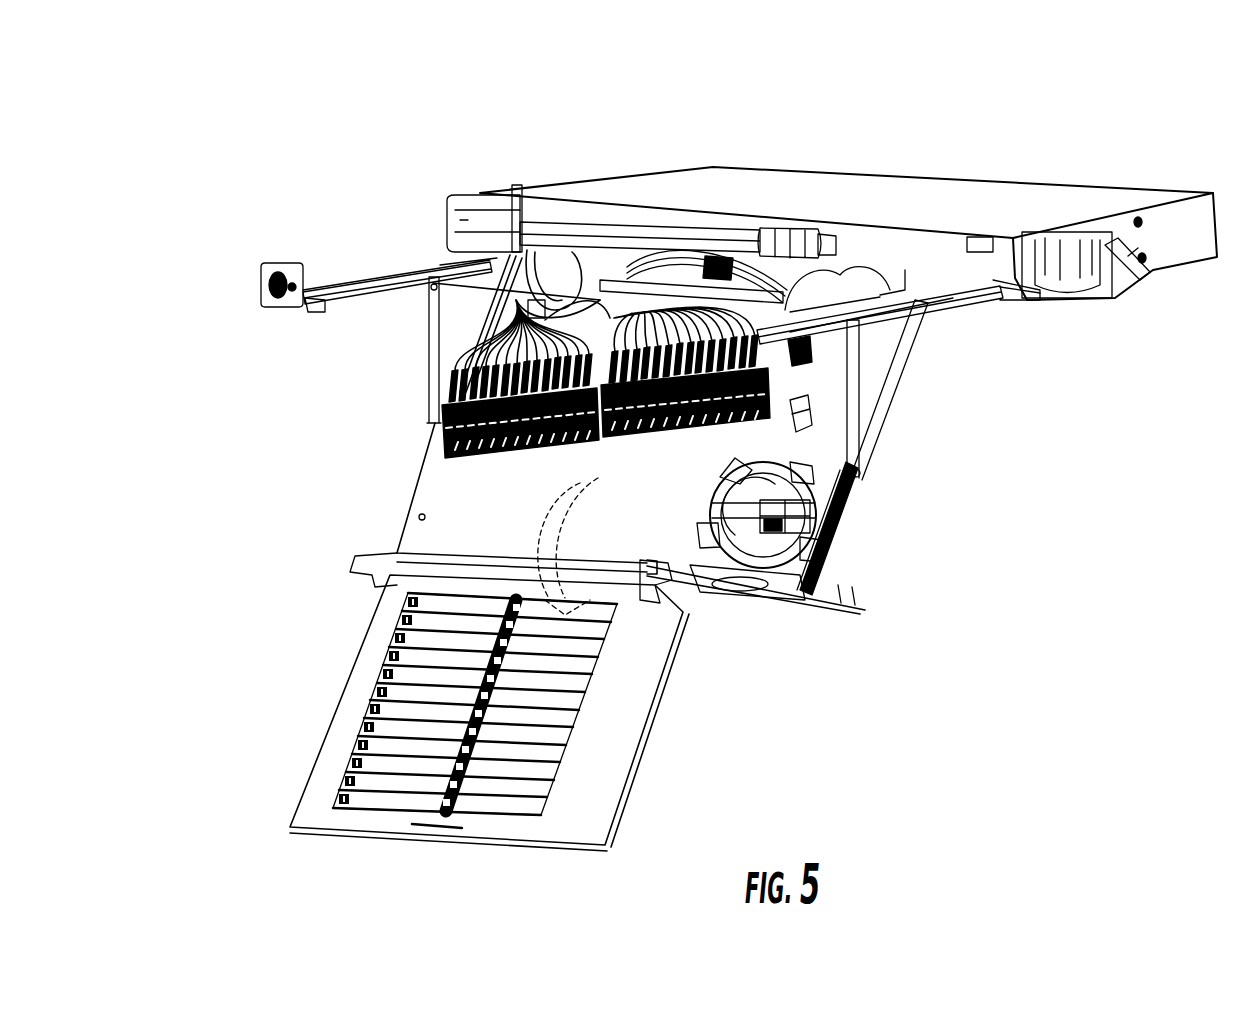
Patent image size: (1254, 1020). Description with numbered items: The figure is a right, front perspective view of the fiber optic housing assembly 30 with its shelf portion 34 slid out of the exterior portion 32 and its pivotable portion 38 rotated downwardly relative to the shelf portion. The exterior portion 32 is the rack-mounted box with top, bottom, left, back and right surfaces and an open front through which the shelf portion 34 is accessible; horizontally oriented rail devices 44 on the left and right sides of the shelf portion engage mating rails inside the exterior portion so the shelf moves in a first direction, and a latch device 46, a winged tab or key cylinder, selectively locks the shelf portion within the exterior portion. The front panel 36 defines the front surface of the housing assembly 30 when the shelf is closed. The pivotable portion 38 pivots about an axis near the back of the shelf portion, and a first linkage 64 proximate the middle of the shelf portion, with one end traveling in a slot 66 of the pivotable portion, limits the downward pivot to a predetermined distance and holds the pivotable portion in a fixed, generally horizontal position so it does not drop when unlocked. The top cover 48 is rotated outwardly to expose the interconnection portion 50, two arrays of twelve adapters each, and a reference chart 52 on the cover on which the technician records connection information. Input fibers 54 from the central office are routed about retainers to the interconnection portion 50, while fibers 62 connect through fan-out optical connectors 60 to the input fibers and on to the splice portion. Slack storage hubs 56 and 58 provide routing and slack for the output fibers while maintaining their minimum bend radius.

The fiber optic housing assembly 30 is at (1120, 137).
The exterior portion 32 is at (737, 185).
The shelf portion 34 is at (933, 303).
The front panel 36 is at (800, 610).
The pivotable portion 38 is at (642, 526).
The rail device 44 is at (357, 290).
The latch device 46 is at (263, 290).
The top cover 48 is at (617, 743).
The interconnection portion 50 is at (440, 420).
The reference chart 52 is at (533, 812).
The input fibers 54 is at (610, 220).
The slack storage hub 56 is at (840, 543).
The slack storage hub 58 is at (873, 243).
The optical connector 60 is at (767, 223).
The fibers 62 is at (833, 233).
The first linkage 64 is at (425, 330).
The slot 66 is at (850, 520).